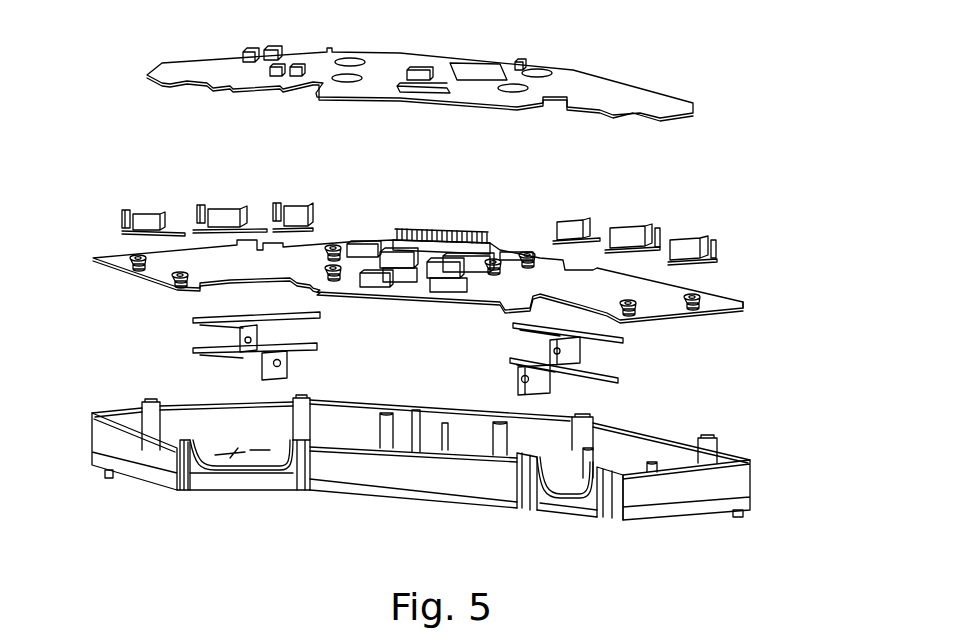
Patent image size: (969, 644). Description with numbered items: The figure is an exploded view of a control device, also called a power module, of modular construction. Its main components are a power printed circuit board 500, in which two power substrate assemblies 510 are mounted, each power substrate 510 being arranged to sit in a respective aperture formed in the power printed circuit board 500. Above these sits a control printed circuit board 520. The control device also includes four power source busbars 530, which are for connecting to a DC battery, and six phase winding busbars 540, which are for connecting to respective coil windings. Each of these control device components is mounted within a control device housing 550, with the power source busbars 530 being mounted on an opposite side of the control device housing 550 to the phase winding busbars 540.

The power printed circuit board 500 is at (740, 310).
The power substrate assembly 510 is at (165, 267).
The control printed circuit board 520 is at (565, 73).
The power source busbar 530 is at (197, 320).
The phase winding busbar 540 is at (312, 207).
The control device housing 550 is at (653, 513).